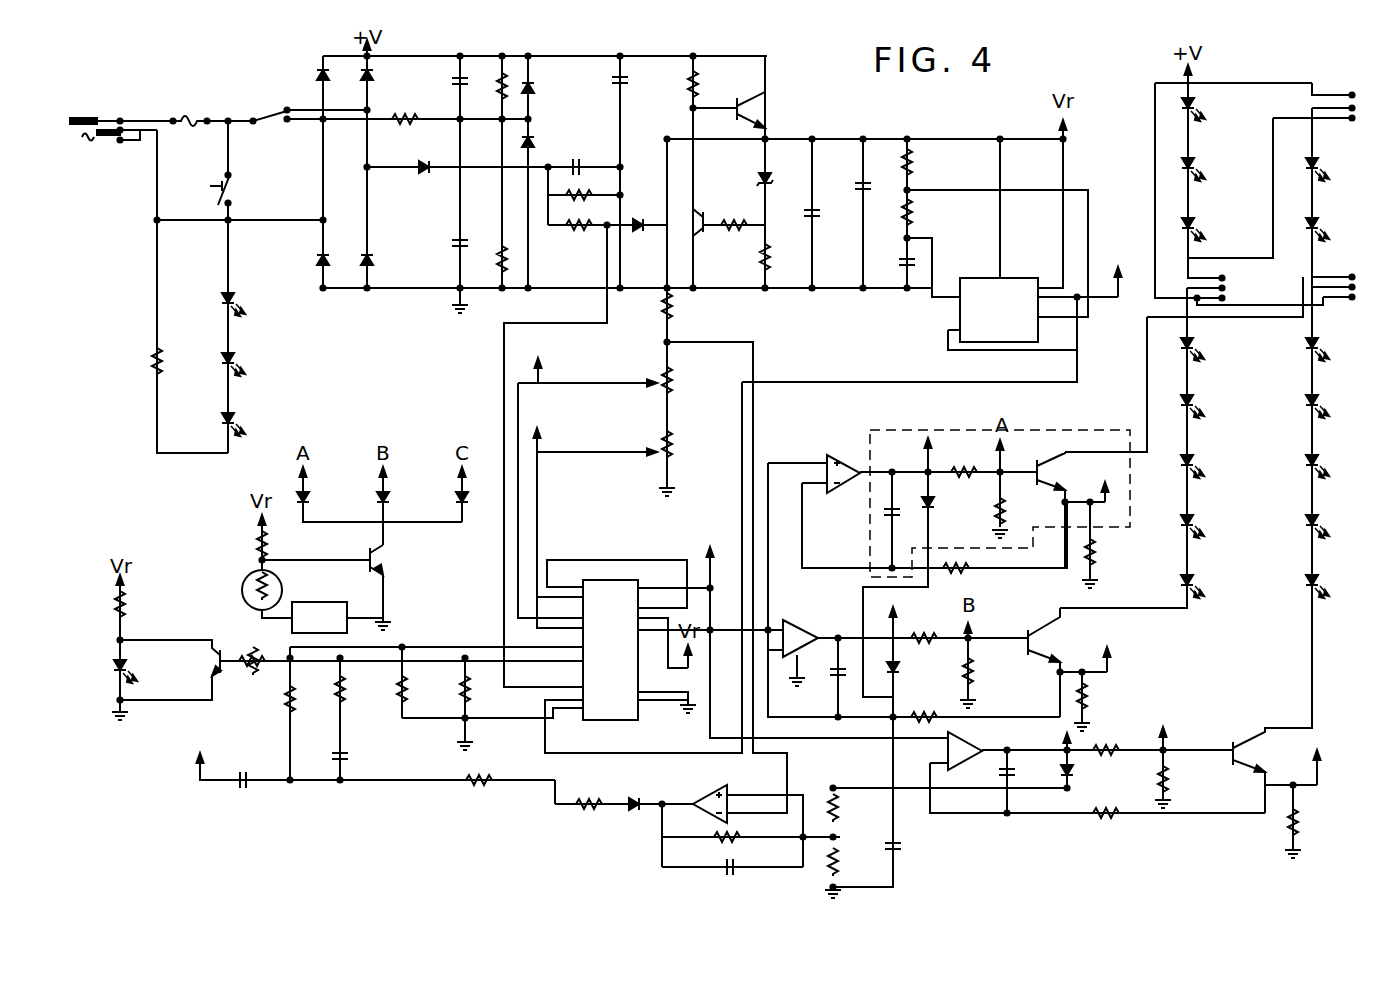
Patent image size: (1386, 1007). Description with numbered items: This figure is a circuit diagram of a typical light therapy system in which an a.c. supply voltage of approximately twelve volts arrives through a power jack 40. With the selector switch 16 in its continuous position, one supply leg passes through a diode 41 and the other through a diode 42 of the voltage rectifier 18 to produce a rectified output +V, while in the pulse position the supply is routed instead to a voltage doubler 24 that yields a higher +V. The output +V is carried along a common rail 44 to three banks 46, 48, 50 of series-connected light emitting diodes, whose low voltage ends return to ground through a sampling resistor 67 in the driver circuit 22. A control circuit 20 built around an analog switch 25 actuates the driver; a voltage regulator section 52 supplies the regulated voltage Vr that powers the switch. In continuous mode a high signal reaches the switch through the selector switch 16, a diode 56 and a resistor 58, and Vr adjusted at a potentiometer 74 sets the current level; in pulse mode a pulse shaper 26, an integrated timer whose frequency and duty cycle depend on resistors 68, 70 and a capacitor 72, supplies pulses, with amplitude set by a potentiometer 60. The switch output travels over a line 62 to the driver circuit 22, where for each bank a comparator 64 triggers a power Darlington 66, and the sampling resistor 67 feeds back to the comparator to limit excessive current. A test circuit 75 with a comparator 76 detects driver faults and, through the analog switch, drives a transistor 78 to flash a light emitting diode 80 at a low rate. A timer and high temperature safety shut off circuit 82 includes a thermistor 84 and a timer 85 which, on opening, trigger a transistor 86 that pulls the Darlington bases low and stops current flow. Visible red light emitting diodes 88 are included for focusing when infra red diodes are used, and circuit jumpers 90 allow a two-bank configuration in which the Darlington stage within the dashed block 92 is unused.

The selector switch 16 is at (285, 108).
The voltage rectifier 18 is at (348, 122).
The control circuit 20 is at (613, 604).
The driver circuit 22 is at (1113, 840).
The voltage doubler 24 is at (445, 130).
The analog switch 25 is at (623, 624).
The pulse shaper 26 is at (977, 277).
The power jack 40 is at (92, 118).
The diode 41 is at (317, 76).
The diode 42 is at (371, 78).
The common rail 44 is at (1150, 150).
The bank of light emitting diodes 46 is at (1333, 193).
The bank of light emitting diodes 48 is at (1257, 463).
The bank of light emitting diodes 50 is at (1292, 498).
The voltage regulator section 52 is at (775, 128).
The diode 56 is at (423, 172).
The resistor 58 is at (585, 227).
The potentiometer 60 is at (660, 373).
The line 62 is at (713, 610).
The comparator 64 is at (843, 453).
The power Darlington 66 is at (1050, 460).
The sampling resistor 67 is at (1090, 555).
The resistor 68 is at (912, 165).
The resistor 70 is at (915, 215).
The capacitor 72 is at (894, 263).
The potentiometer 74 is at (677, 447).
The test circuit 75 is at (635, 833).
The comparator 76 is at (700, 793).
The transistor 78 is at (226, 646).
The light emitting diode 80 is at (116, 660).
The timer and high temperature safety shut off circuit 82 is at (300, 575).
The thermistor 84 is at (293, 590).
The timer 85 is at (360, 598).
The transistor 86 is at (385, 557).
The visible red wave length light emitting diodes 88 is at (250, 348).
The circuit jumpers 90 is at (1360, 103).
The dashed block 92 is at (957, 427).